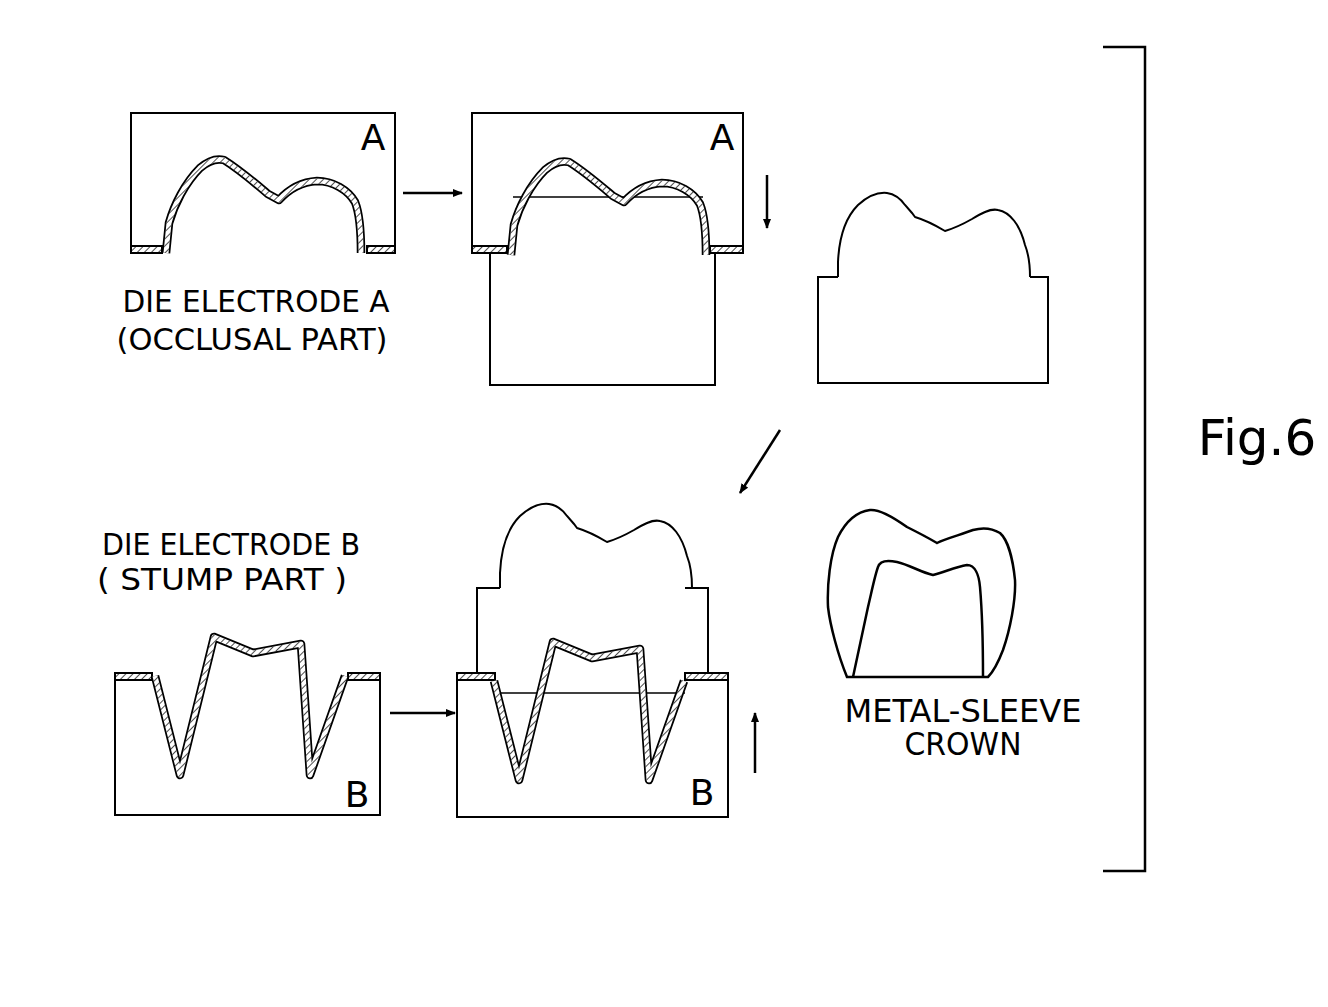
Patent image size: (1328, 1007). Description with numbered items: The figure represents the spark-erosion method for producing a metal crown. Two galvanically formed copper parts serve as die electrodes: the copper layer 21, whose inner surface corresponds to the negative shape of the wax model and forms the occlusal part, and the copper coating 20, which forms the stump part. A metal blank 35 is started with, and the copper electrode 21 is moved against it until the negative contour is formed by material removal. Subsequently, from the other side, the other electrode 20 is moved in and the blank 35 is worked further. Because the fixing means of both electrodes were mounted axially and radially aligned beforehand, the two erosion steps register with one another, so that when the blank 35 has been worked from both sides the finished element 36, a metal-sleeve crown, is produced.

The copper layer 21 is at (262, 187).
The blank 35 is at (555, 362).
The copper coating 20 is at (307, 667).
The finished element 36 is at (1003, 573).